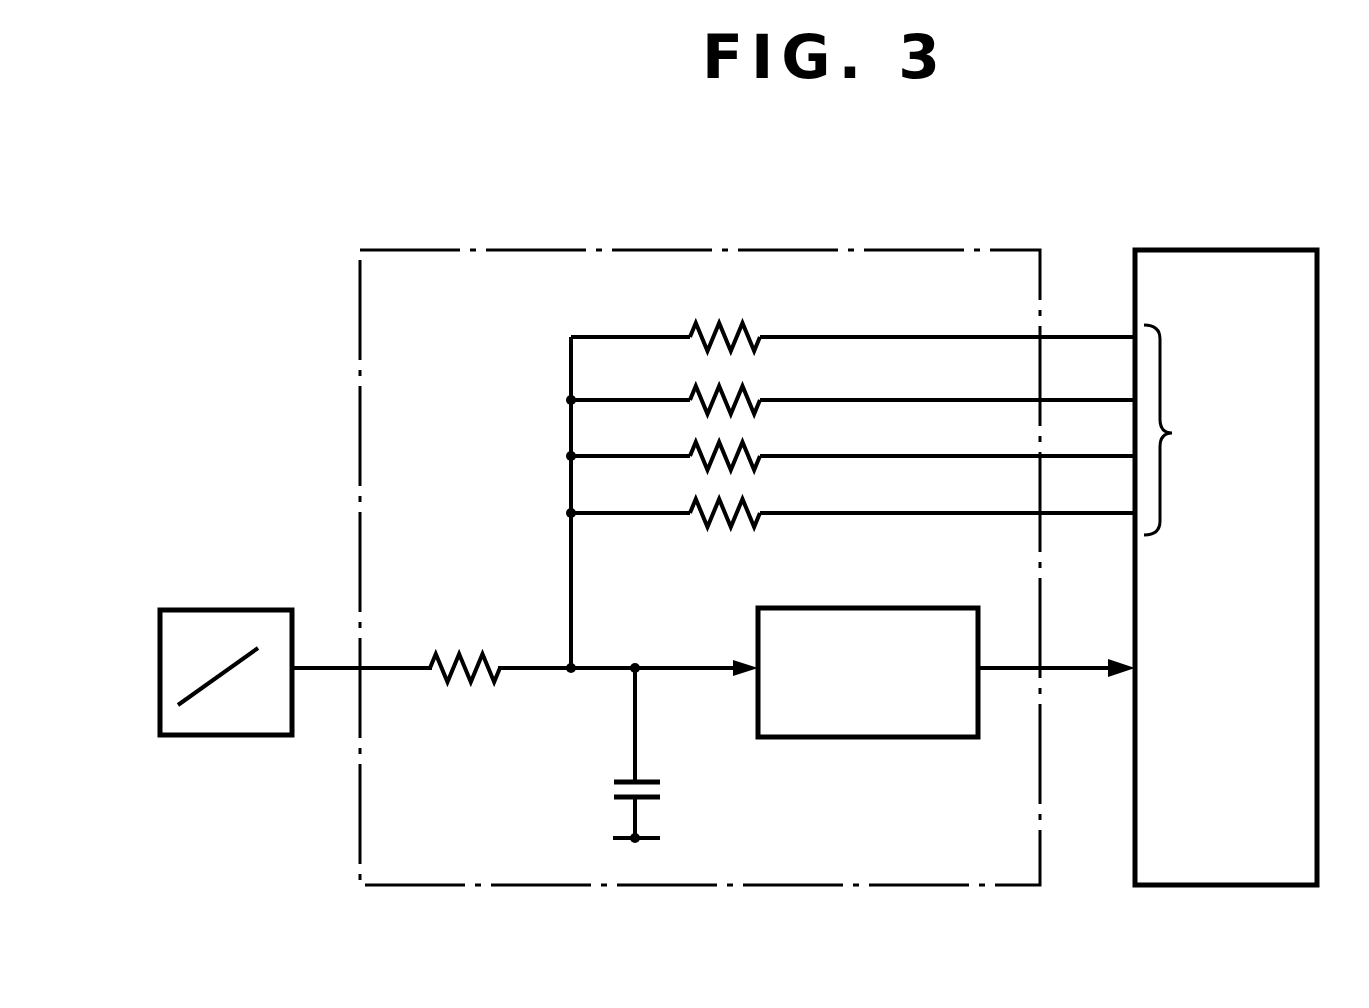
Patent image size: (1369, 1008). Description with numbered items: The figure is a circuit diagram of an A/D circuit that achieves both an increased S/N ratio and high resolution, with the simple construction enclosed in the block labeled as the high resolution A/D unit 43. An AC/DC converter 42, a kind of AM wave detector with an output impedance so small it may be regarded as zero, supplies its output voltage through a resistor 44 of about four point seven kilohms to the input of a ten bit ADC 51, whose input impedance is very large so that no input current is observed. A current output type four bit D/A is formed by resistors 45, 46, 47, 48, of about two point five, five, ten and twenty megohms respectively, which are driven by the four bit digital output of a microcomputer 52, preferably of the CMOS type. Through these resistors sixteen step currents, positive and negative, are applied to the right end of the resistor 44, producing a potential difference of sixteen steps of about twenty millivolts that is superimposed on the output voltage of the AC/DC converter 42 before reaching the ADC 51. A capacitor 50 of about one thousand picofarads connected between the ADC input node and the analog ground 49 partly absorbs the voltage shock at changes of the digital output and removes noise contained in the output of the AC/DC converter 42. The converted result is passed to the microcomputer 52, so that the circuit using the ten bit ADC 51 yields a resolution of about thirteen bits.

The AC/DC converter 42 is at (198, 610).
The high resolution A/D unit 43 is at (727, 242).
The resistor 44 is at (468, 676).
The resistor 45 is at (703, 326).
The resistor 46 is at (724, 392).
The resistor 47 is at (703, 448).
The resistor 48 is at (722, 507).
The analog ground 49 is at (655, 840).
The capacitor 50 is at (650, 780).
The 10 bit ADC 51 is at (923, 737).
The microcomputer 52 is at (1250, 250).